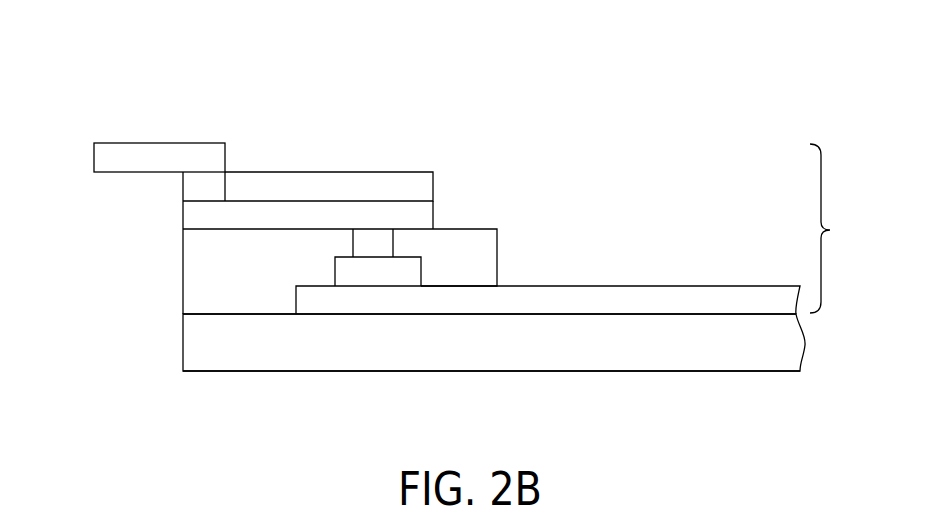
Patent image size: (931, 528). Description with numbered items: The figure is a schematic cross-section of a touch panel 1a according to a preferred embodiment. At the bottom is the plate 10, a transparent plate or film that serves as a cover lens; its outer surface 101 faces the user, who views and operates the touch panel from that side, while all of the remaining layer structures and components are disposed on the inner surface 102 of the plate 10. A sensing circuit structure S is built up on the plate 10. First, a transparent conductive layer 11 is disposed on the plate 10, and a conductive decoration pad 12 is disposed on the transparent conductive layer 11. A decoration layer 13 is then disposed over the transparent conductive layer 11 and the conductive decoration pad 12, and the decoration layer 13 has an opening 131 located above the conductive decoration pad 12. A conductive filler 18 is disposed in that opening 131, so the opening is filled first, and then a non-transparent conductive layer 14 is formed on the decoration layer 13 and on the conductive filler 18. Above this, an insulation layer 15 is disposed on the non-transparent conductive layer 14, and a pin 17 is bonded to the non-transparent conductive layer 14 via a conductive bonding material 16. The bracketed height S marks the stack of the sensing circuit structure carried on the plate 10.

The touch panel 1a is at (132, 62).
The plate 10 is at (200, 352).
The outer surface 101 is at (198, 372).
The inner surface 102 is at (198, 313).
The transparent conductive layer 11 is at (700, 297).
The conductive decoration pad 12 is at (376, 272).
The decoration layer 13 is at (200, 258).
The opening 131 is at (395, 243).
The non-transparent conductive layer 14 is at (200, 218).
The insulation layer 15 is at (326, 183).
The conductive bonding material 16 is at (208, 186).
The pin 17 is at (146, 155).
The conductive filler 18 is at (366, 237).
The sensing circuit structure S is at (831, 228).